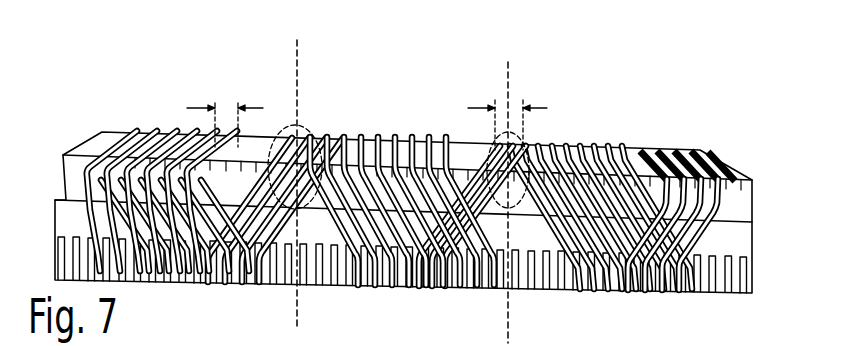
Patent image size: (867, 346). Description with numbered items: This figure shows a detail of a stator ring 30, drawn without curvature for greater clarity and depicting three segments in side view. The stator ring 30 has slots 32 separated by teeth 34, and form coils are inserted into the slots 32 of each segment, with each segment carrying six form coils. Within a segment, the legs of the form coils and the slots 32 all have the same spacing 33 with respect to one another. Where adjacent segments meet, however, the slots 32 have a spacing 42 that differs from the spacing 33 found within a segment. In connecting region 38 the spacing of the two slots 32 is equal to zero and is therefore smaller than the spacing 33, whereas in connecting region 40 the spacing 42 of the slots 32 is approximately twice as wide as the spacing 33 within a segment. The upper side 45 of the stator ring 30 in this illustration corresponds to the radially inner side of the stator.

The stator ring 30 is at (85, 220).
The slots 32 is at (104, 145).
The spacing 33 is at (197, 102).
The teeth 34 is at (370, 140).
The connecting region 38 is at (307, 132).
The connecting region 40 is at (528, 143).
The spacing 42 is at (513, 115).
The upper side 45 is at (672, 134).